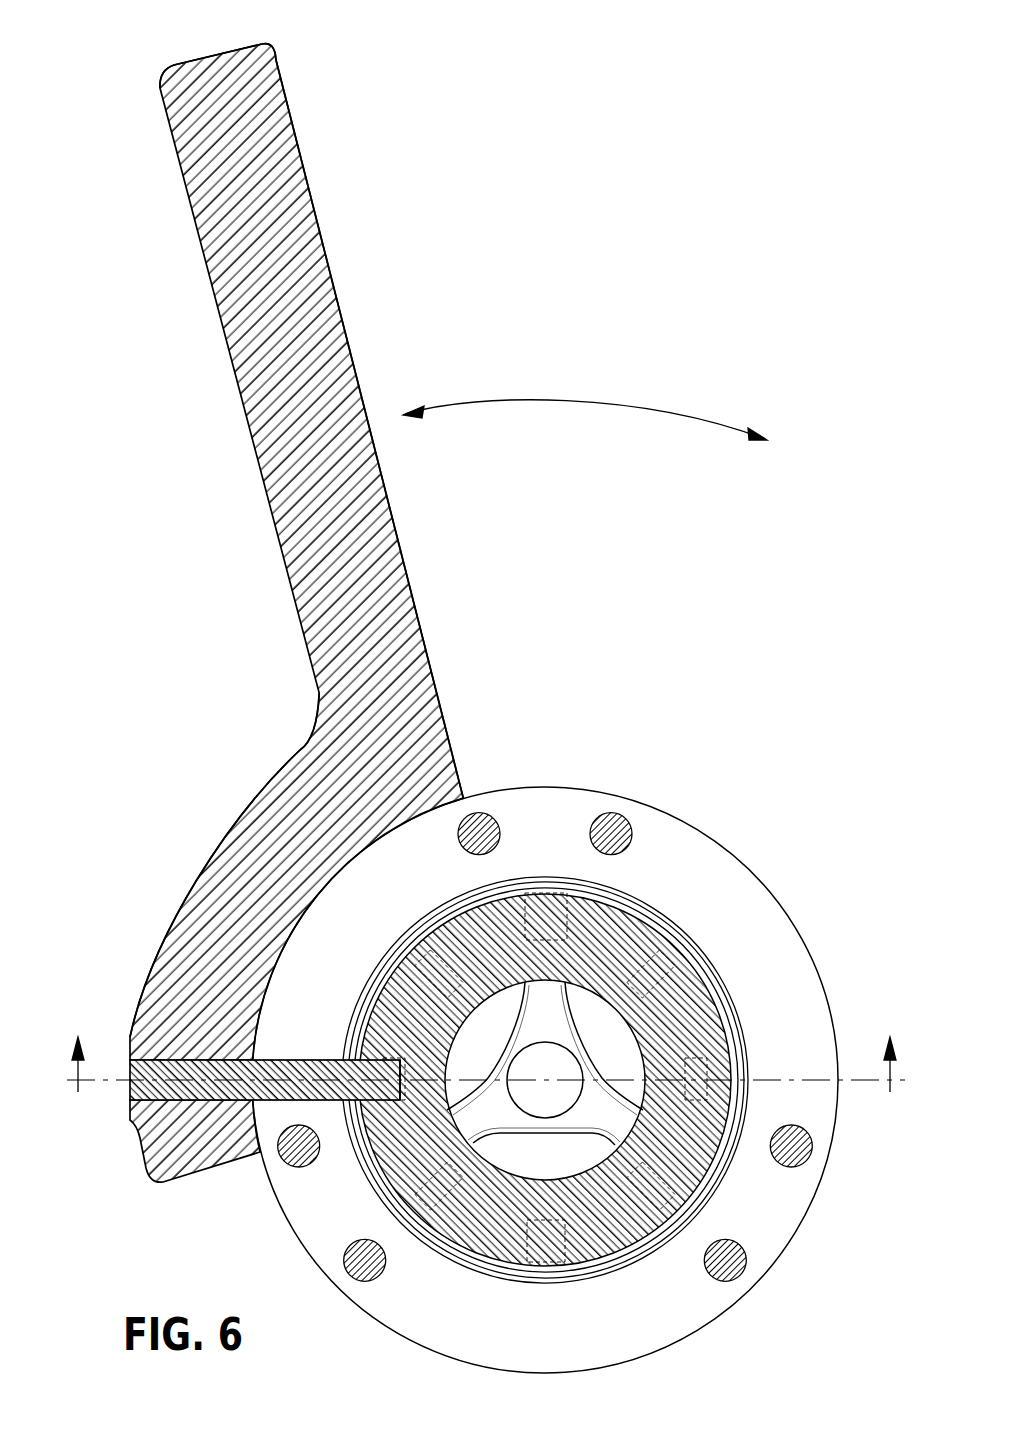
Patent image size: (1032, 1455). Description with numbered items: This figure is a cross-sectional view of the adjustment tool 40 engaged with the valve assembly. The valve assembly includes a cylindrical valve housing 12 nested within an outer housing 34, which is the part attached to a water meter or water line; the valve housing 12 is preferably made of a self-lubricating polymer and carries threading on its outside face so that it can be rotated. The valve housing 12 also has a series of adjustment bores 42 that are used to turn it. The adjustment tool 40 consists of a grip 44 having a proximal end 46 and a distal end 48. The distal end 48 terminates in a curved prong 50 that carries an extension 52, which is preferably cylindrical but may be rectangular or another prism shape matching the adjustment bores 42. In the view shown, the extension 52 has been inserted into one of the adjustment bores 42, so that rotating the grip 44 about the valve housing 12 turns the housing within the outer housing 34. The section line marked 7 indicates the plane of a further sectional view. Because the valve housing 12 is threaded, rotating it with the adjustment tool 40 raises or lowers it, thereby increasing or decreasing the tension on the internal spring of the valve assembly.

The valve housing 12 is at (753, 913).
The outer housing 34 is at (657, 810).
The adjustment tool 40 is at (242, 347).
The adjustment bores 42 is at (373, 1097).
The grip 44 is at (355, 342).
The proximal end 46 is at (272, 50).
The distal end 48 is at (372, 677).
The curved prong 50 is at (245, 848).
The extension 52 is at (292, 1098).
The section line 7- 7 is at (486, 1087).